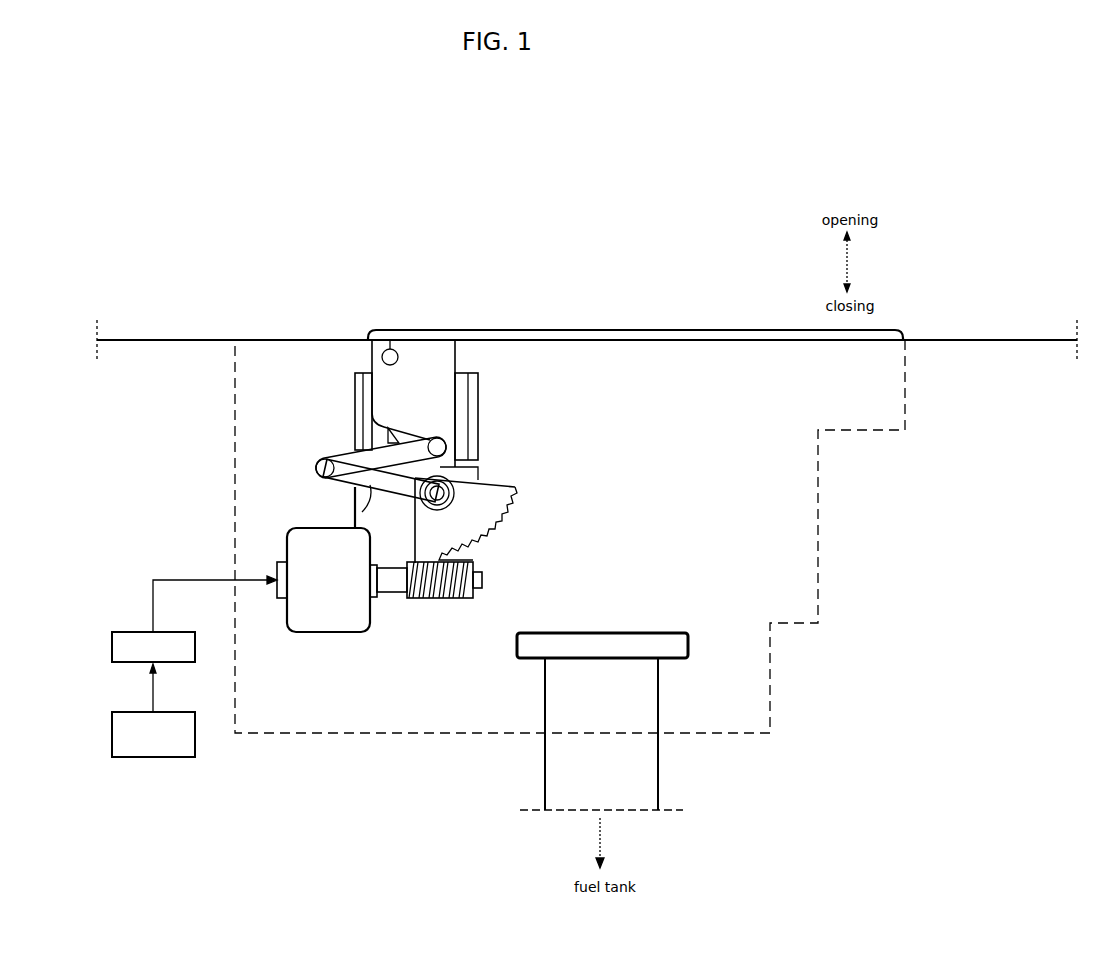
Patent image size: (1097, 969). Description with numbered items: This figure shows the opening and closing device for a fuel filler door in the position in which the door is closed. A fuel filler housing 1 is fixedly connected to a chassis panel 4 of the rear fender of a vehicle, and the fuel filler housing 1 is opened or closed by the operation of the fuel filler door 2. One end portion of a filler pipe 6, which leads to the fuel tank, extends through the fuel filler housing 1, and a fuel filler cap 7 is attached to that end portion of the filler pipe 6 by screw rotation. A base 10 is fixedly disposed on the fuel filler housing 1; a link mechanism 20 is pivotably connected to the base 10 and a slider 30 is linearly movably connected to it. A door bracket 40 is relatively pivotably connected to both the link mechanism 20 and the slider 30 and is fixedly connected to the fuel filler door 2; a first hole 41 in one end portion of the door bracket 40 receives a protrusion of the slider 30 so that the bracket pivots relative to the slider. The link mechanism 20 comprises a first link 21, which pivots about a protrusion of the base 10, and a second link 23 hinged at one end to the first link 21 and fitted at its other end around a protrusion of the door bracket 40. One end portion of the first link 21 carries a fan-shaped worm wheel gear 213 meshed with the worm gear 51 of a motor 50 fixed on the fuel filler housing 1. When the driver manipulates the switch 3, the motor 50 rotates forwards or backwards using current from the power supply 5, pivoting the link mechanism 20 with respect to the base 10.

The fuel filler housing 1 is at (820, 527).
The fuel filler door 2 is at (704, 330).
The switch 3 is at (112, 646).
The chassis panel 4 is at (130, 338).
The power supply 5 is at (112, 733).
The filler pipe 6 is at (660, 765).
The fuel filler cap 7 is at (668, 643).
The base 10 is at (355, 413).
The link mechanism 20 is at (310, 476).
The first link 21 is at (353, 515).
The second link 23 is at (350, 452).
The slider 30 is at (477, 470).
The door bracket 40 is at (408, 360).
The first hole 41 is at (390, 349).
The motor 50 is at (323, 605).
The worm gear 51 is at (425, 600).
The fan-shaped worm wheel gear 213 is at (497, 530).